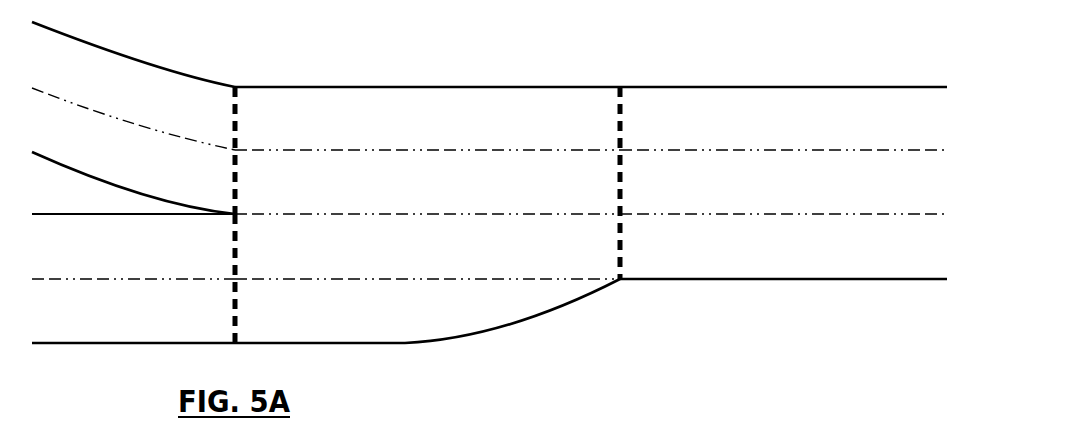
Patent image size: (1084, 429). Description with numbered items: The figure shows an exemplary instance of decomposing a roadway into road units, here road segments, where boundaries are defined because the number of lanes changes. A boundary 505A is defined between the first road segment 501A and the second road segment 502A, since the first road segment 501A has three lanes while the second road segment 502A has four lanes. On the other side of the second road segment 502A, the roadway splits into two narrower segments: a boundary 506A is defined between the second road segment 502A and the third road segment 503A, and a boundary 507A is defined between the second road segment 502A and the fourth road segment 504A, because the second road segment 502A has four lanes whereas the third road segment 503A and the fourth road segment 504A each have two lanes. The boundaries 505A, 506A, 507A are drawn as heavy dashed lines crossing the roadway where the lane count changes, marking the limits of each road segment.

The road segment 1 501A is at (840, 76).
The road segment 2 502A is at (620, 75).
The road segment 3 503A is at (135, 359).
The road segment 4 504A is at (173, 58).
The boundary 505A is at (623, 228).
The boundary 506A is at (238, 292).
The boundary 507A is at (238, 106).